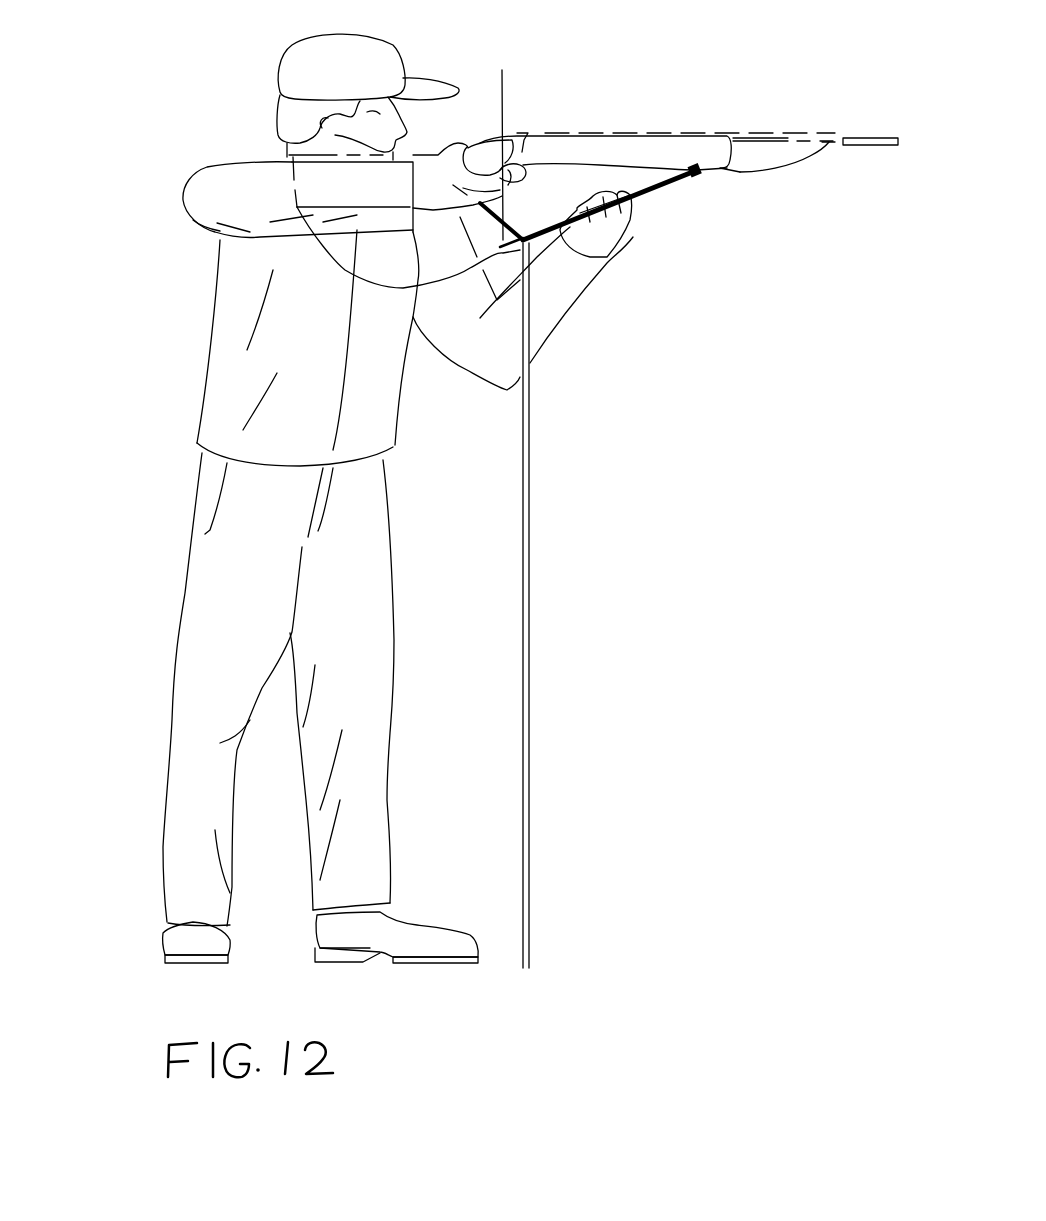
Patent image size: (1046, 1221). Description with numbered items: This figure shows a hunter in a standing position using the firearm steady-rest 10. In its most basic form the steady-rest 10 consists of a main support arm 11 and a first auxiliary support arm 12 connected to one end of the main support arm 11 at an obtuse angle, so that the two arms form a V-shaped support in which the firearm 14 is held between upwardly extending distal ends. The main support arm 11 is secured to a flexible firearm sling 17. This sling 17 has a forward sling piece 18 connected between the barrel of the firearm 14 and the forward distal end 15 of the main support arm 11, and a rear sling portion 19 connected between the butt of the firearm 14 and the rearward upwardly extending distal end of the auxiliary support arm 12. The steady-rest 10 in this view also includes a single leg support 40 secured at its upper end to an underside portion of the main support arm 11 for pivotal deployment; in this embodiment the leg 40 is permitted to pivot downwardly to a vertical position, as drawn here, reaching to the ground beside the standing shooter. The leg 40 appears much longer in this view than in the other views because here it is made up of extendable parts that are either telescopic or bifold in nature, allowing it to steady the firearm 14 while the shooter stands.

The firearm steady-rest 10 is at (650, 498).
The main support arm 11 is at (788, 285).
The first auxiliary support arm 12 is at (500, 134).
The firearm 14 is at (655, 47).
The forward distal end 15 is at (742, 198).
The flexible firearm sling 17 is at (187, 288).
The forward sling piece 18 is at (892, 173).
The rear sling portion 19 is at (225, 238).
The single leg support 40 is at (618, 672).